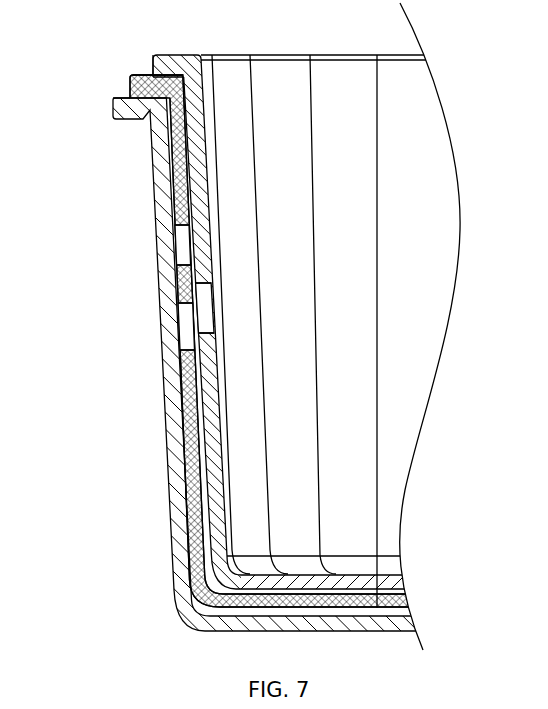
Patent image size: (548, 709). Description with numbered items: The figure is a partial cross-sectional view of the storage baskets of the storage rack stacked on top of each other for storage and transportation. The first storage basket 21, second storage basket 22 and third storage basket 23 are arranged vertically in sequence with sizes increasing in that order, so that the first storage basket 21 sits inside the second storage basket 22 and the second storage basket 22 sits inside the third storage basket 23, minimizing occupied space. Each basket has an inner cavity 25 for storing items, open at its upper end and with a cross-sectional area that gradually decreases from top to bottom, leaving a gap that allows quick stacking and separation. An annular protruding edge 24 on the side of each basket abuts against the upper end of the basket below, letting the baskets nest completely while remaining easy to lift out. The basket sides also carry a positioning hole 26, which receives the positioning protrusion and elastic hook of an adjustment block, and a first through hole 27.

The first storage basket 21 is at (195, 145).
The second storage basket 22 is at (193, 478).
The third storage basket 23 is at (172, 425).
The protruding edge 24 is at (165, 63).
The inner cavity 25 is at (393, 325).
The positioning hole 26 is at (198, 218).
The first through hole 27 is at (202, 317).